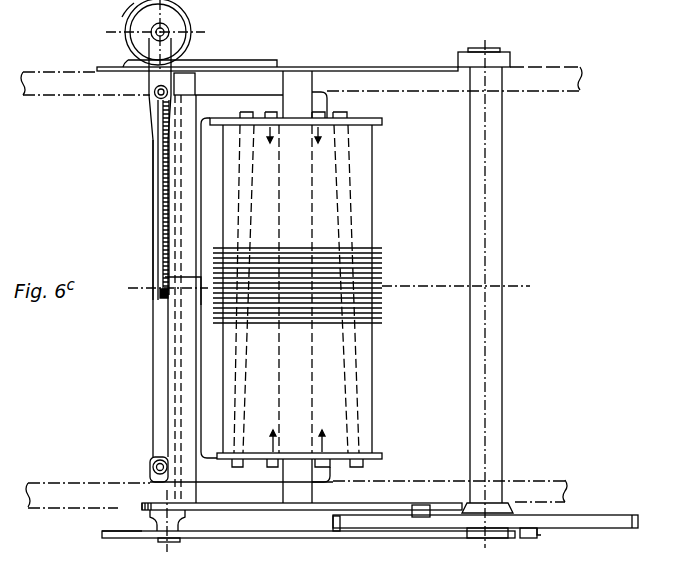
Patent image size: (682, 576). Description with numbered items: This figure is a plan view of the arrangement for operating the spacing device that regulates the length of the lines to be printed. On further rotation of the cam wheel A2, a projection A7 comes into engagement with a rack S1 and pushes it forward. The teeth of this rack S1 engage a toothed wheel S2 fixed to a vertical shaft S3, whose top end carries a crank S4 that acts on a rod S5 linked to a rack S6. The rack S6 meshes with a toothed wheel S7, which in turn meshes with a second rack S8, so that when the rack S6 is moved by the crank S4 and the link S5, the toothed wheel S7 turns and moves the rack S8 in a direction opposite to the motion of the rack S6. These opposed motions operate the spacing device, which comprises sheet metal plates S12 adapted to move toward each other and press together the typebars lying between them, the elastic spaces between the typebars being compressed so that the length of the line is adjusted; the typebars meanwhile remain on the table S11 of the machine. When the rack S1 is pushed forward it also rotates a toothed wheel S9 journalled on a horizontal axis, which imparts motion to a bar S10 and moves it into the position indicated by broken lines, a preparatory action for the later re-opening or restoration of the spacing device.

The rack S1 is at (366, 67).
The toothed wheel S2 is at (180, 27).
The vertical shaft S3 is at (170, 32).
The crank S4 is at (156, 52).
The rod S5 is at (158, 213).
The rack S6 is at (178, 363).
The toothed wheel S7 is at (162, 295).
The second rack S8 is at (165, 162).
The toothed wheel S9 is at (160, 528).
The bar S10 is at (222, 510).
The table S11 is at (170, 557).
The sheet metal plates S12 is at (120, 553).
The cam wheel A2 is at (600, 527).
The projection A7 is at (526, 538).